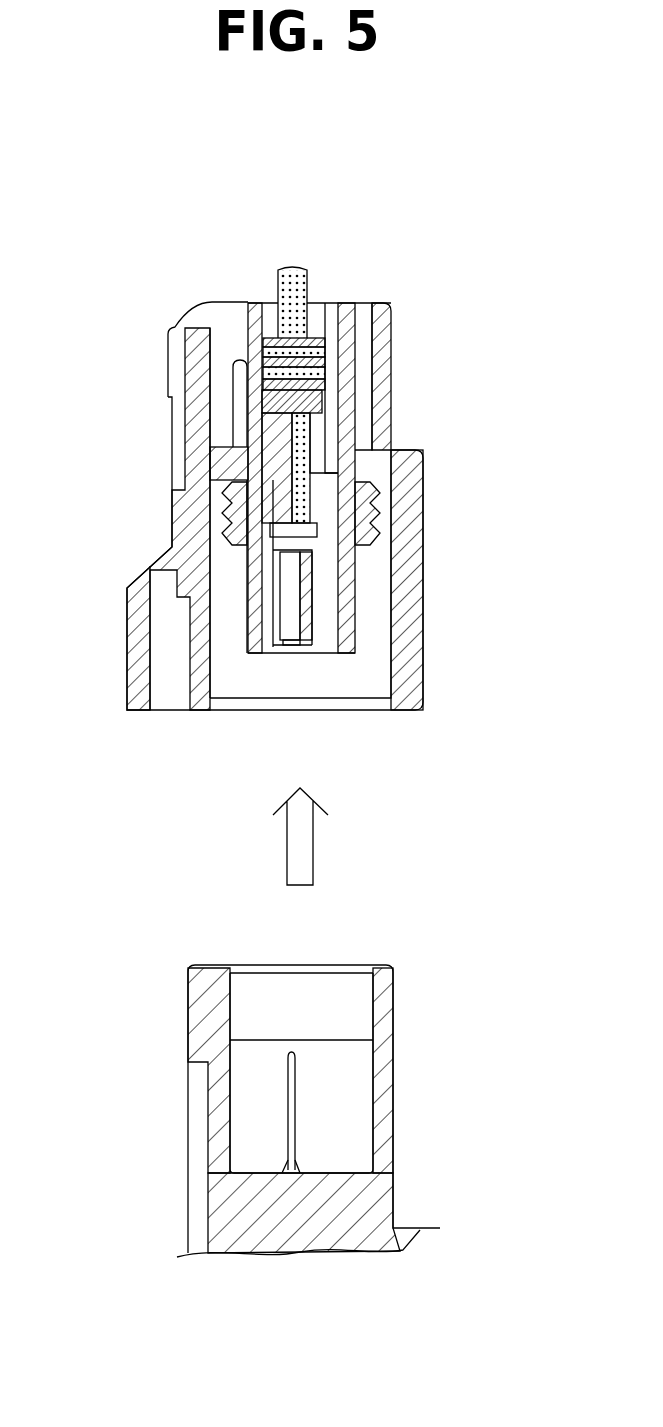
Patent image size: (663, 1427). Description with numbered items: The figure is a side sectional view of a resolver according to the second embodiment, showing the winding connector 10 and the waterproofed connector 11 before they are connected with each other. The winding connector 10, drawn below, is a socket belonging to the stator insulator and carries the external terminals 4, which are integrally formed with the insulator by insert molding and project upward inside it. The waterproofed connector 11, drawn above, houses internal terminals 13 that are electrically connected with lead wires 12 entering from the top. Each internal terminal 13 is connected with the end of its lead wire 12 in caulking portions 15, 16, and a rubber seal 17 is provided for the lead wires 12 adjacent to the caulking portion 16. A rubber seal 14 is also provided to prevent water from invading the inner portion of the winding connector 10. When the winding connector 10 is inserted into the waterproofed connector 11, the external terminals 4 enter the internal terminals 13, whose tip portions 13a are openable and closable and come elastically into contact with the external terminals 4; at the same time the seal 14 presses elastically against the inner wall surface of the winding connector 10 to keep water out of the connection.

The external terminal 4 is at (283, 1103).
The winding connector 10 is at (208, 1000).
The waterproofed connector 11 is at (170, 333).
The lead wire 12 is at (278, 298).
The internal terminal 13 is at (283, 637).
The terminal contact portion 13a is at (283, 648).
The seal 14 is at (391, 496).
The caulking portion 15 is at (307, 540).
The caulking portion 16 is at (322, 398).
The seal 17 is at (325, 350).